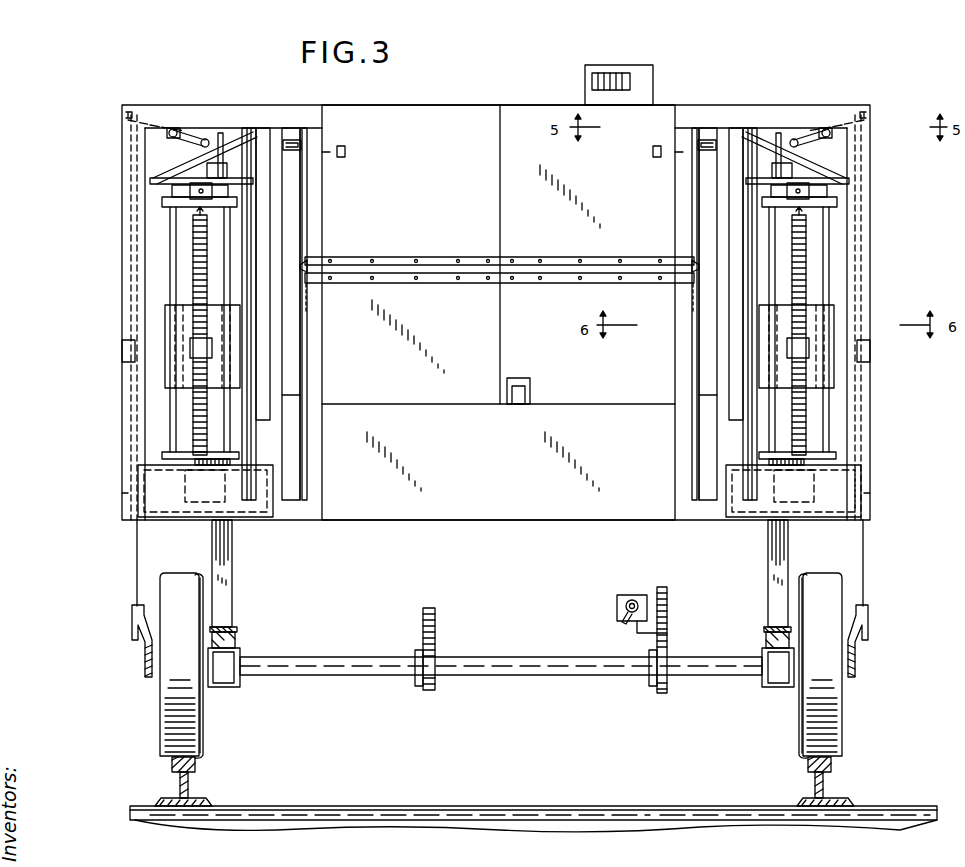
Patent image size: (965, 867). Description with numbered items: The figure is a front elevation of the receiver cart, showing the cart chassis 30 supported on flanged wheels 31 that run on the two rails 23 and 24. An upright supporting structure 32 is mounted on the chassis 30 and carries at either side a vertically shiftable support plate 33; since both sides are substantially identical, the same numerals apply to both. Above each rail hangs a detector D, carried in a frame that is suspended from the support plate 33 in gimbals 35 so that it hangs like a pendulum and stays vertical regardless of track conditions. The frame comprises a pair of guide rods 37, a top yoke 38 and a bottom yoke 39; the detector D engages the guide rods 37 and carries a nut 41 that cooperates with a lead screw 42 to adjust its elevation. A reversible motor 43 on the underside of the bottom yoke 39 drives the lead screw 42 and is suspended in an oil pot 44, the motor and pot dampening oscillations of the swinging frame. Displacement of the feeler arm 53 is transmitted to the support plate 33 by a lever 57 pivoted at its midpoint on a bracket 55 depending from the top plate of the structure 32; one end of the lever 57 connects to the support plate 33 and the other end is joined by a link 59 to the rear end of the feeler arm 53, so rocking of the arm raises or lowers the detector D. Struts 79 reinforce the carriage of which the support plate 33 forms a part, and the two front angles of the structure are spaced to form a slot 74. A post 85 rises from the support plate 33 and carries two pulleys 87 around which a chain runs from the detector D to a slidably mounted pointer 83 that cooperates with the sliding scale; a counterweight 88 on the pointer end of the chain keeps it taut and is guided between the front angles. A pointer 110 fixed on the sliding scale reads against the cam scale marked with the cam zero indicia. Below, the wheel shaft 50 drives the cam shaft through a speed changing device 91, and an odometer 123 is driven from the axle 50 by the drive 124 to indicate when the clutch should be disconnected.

The rail 23 is at (832, 765).
The rail 24 is at (198, 766).
The cart chassis 30 is at (236, 622).
The flanged wheels 31 is at (203, 725).
The upright supporting structure 32 is at (428, 512).
The support plate 33 is at (152, 182).
The gimbals 35 is at (828, 192).
The guide rods 37 is at (170, 398).
The top yoke 38 is at (165, 205).
The bottom yoke 39 is at (238, 456).
The nut 41 is at (190, 345).
The lead screw 42 is at (193, 256).
The reversible motor 43 is at (138, 492).
The oil pot 44 is at (152, 470).
The wheel shaft 50 is at (508, 657).
The feeler arm 53 is at (145, 656).
The bracket 55 is at (178, 129).
The lever 57 is at (173, 129).
The link 59 is at (137, 543).
The slot 74 is at (302, 238).
The struts 79 is at (205, 153).
The pointer 83 is at (312, 268).
The post 85 is at (258, 150).
The pulleys 87 is at (207, 140).
The counterweight 88 is at (310, 285).
The speed changing device 91 is at (440, 613).
The pointer 110 is at (300, 165).
The odometer 123 is at (585, 78).
The odometer drive 124 is at (680, 605).
The detector D is at (160, 302).